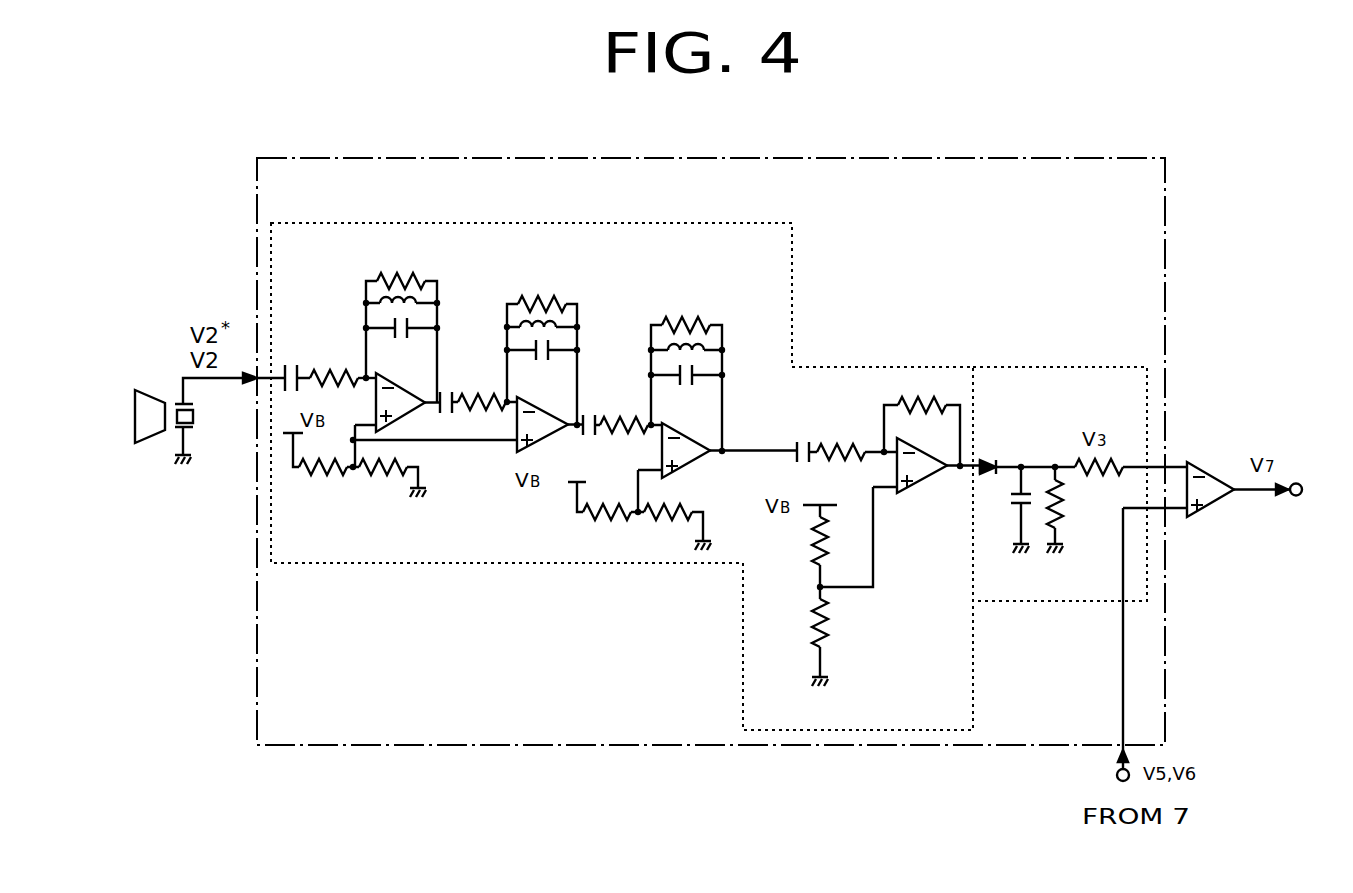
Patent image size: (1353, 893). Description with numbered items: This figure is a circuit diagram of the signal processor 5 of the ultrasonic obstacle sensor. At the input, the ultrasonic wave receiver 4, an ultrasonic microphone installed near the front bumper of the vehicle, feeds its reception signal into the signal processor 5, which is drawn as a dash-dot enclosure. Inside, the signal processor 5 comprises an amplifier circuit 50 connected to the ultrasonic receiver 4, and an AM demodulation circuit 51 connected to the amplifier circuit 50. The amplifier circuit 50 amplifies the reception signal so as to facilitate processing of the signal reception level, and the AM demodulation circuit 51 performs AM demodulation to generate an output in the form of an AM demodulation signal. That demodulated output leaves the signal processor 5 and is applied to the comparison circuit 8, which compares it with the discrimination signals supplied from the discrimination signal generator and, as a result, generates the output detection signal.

The ultrasonic wave receiver 4 is at (170, 393).
The signal processor 5 is at (982, 158).
The comparison circuit 8 is at (1213, 469).
The amplifier circuit 50 is at (793, 290).
The AM demodulation circuit 51 is at (1077, 367).